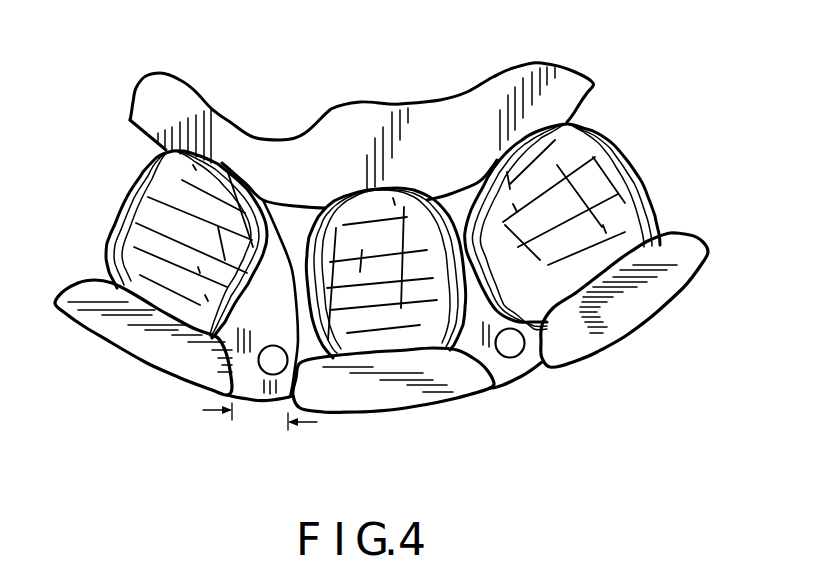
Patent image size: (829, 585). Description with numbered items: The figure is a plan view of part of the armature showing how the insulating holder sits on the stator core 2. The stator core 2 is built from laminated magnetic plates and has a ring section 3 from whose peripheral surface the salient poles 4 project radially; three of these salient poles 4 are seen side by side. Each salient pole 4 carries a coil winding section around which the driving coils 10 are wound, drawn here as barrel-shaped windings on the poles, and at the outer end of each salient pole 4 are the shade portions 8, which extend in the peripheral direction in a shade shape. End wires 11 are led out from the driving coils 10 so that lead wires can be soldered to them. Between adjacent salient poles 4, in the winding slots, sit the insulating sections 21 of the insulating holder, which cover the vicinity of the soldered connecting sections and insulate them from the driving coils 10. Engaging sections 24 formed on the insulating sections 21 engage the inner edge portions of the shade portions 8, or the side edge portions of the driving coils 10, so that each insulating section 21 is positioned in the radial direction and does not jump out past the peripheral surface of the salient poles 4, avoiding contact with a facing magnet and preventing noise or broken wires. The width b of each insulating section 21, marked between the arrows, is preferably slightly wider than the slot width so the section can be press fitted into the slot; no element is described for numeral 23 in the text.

The stator core 2 is at (377, 243).
The ring section 3 is at (373, 120).
The salient poles 4 is at (377, 334).
The shade portions 8 is at (137, 342).
The driving coils 10 is at (147, 207).
The end wires 11 is at (288, 190).
The insulating sections 21 is at (232, 403).
The bore 23 is at (275, 375).
The engaging sections 24 is at (273, 360).